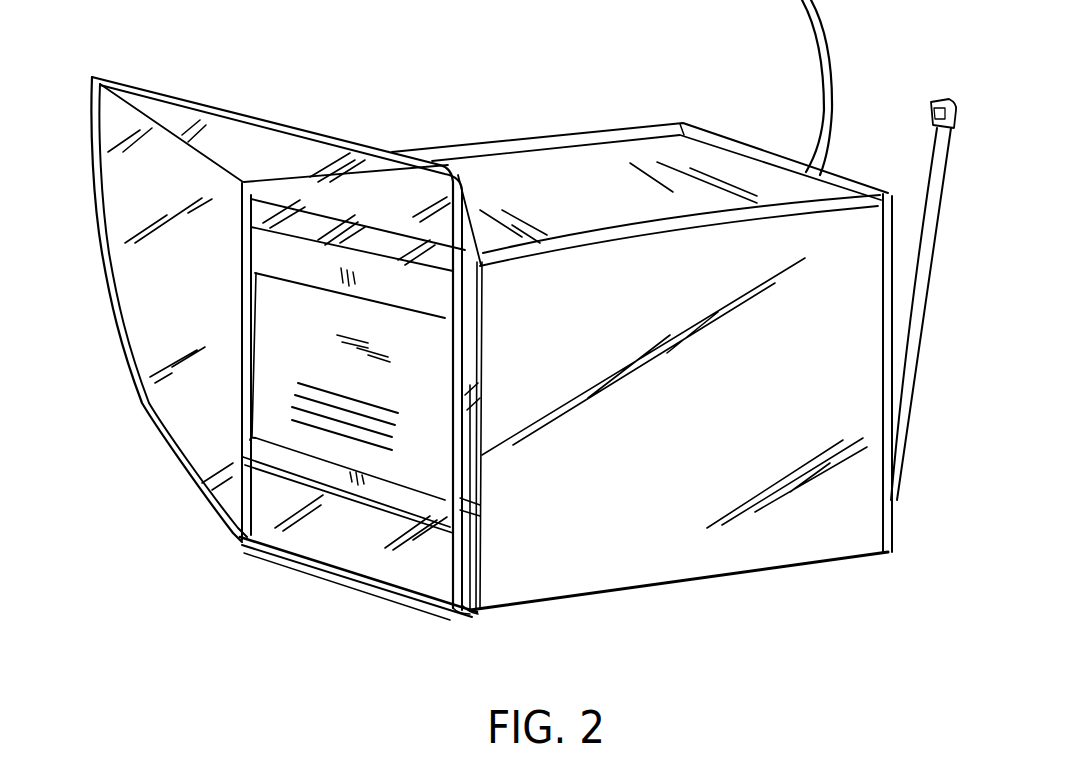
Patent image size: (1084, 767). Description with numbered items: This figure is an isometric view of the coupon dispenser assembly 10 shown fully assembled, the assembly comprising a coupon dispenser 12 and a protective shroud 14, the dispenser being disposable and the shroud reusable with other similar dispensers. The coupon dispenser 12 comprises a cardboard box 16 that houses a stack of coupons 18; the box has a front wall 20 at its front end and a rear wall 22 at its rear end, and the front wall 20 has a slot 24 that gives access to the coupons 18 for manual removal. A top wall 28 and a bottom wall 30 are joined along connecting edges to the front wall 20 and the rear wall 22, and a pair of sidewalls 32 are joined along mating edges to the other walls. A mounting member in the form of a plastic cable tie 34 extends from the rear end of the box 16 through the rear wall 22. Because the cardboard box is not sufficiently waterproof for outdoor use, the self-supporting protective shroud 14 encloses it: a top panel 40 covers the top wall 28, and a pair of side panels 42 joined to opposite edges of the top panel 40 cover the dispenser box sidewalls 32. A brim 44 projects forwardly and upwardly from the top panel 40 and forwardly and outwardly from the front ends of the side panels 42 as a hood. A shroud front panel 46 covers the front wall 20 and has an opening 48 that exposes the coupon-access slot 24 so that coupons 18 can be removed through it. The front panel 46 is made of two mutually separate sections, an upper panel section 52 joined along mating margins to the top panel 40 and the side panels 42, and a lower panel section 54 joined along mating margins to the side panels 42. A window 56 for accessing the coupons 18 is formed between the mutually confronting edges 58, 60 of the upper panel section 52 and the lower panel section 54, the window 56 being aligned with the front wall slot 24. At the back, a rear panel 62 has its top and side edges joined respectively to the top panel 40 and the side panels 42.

The coupon dispenser assembly 10 is at (441, 40).
The coupon dispenser 12 is at (362, 277).
The protective shroud 14 is at (132, 318).
The box 16 is at (612, 160).
The coupons 18 is at (503, 435).
The front wall 20 is at (262, 263).
The rear wall 22 is at (832, 180).
The slot 24 is at (480, 490).
The top wall 28 is at (637, 150).
The bottom wall 30 is at (375, 587).
The sidewalls 32 is at (235, 325).
The plastic cable tie 34 is at (830, 43).
The top panel 40 is at (522, 142).
The side panels 42 is at (233, 390).
The brim 44 is at (178, 117).
The front panel 46 is at (295, 547).
The opening 48 is at (237, 422).
The upper panel section 52 is at (483, 273).
The lower panel section 54 is at (438, 587).
The window 56 is at (483, 302).
The edge 58 is at (280, 243).
The edge 60 is at (418, 513).
The rear panel 62 is at (890, 507).